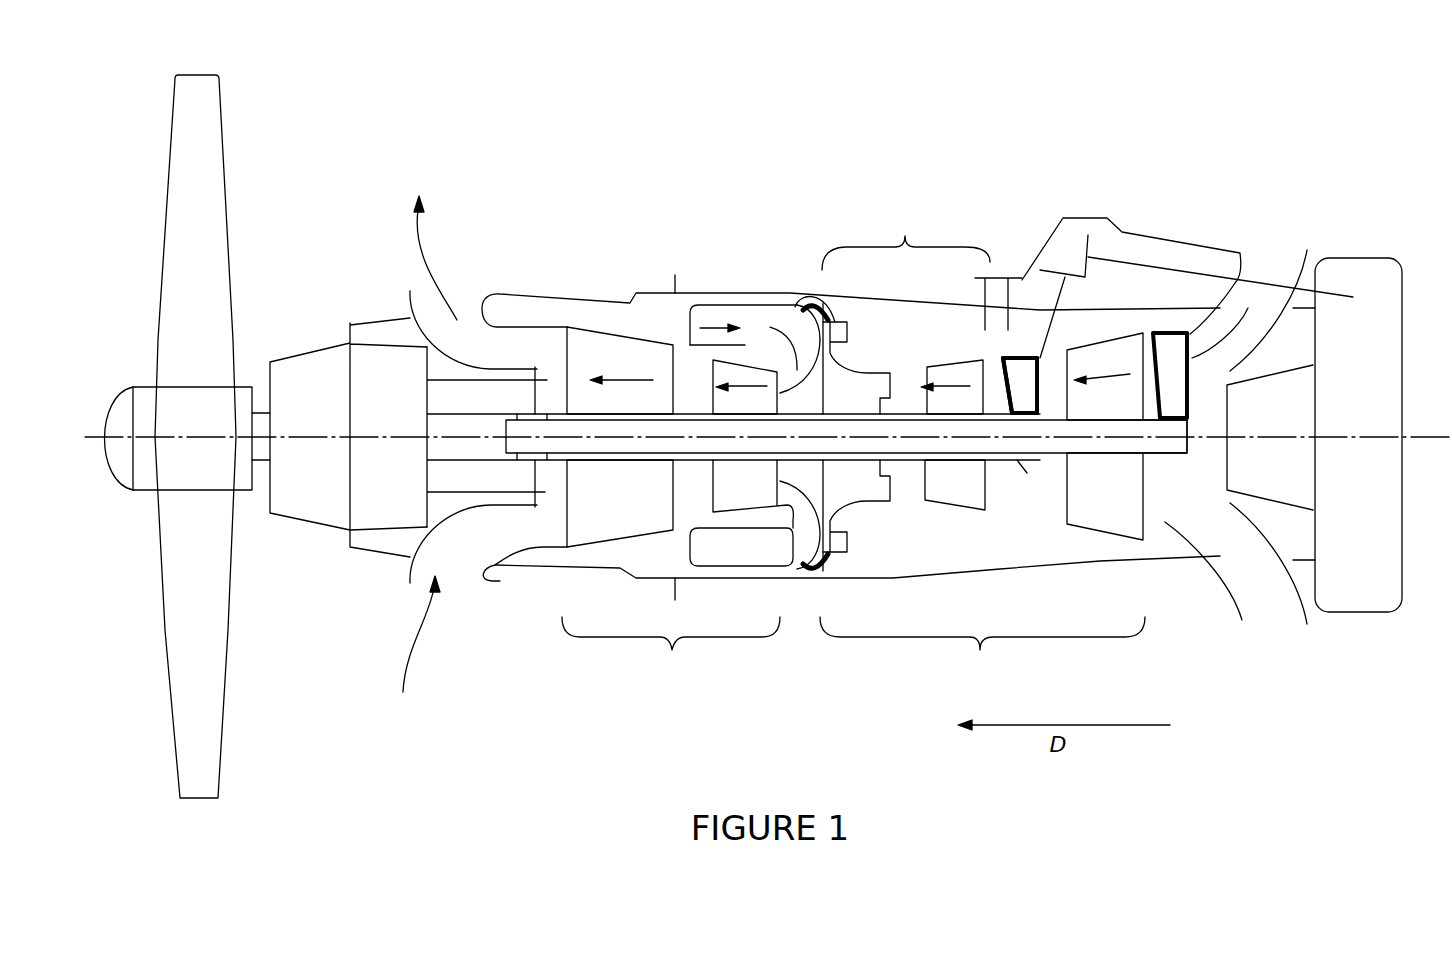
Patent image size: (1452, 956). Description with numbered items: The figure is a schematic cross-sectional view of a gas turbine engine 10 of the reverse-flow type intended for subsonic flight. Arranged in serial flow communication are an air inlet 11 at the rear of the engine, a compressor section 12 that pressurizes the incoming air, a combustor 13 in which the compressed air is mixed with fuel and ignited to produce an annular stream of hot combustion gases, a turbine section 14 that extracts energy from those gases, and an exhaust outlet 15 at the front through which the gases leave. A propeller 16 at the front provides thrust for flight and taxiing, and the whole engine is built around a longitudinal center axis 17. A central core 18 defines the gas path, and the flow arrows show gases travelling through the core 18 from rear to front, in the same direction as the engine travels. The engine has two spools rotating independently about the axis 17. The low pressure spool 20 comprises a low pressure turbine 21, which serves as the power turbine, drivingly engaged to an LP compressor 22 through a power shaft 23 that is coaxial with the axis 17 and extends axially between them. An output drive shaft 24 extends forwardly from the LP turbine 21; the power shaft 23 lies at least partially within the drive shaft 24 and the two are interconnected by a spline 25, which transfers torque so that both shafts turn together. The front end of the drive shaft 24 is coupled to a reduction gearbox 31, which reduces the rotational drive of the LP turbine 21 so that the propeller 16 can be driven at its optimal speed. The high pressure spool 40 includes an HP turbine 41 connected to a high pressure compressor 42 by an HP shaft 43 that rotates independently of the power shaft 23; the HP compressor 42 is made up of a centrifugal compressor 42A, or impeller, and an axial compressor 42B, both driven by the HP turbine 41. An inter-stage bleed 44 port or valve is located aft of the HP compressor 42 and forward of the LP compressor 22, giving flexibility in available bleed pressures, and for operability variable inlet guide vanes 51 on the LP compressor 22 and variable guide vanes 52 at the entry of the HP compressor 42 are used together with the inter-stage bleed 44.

The gas turbine engine 10 is at (302, 128).
The air inlet 11 is at (1317, 238).
The compressor section 12 is at (982, 651).
The combustor 13 is at (750, 330).
The turbine section 14 is at (671, 654).
The exhaust outlet 15 is at (420, 459).
The propeller 16 is at (133, 386).
The longitudinal center axis 17 is at (1425, 437).
The central core 18 is at (640, 358).
The low pressure spool 20 is at (1050, 470).
The low pressure turbine 21 is at (589, 335).
The LP compressor 22 is at (1126, 316).
The power shaft 23 is at (697, 418).
The output drive shaft 24 is at (488, 398).
The spline 25 is at (533, 510).
The reduction gearbox 31 is at (391, 337).
The high pressure spool 40 is at (1003, 393).
The HP turbine 41 is at (745, 345).
The high pressure compressor 42 is at (906, 234).
The centrifugal compressor 42A is at (865, 460).
The axial compressor 42B is at (962, 500).
The HP shaft 43 is at (838, 366).
The inter-stage bleed 44 is at (1000, 262).
The variable inlet guide vanes 51 is at (1180, 352).
The variable guide vanes 52 is at (1033, 358).